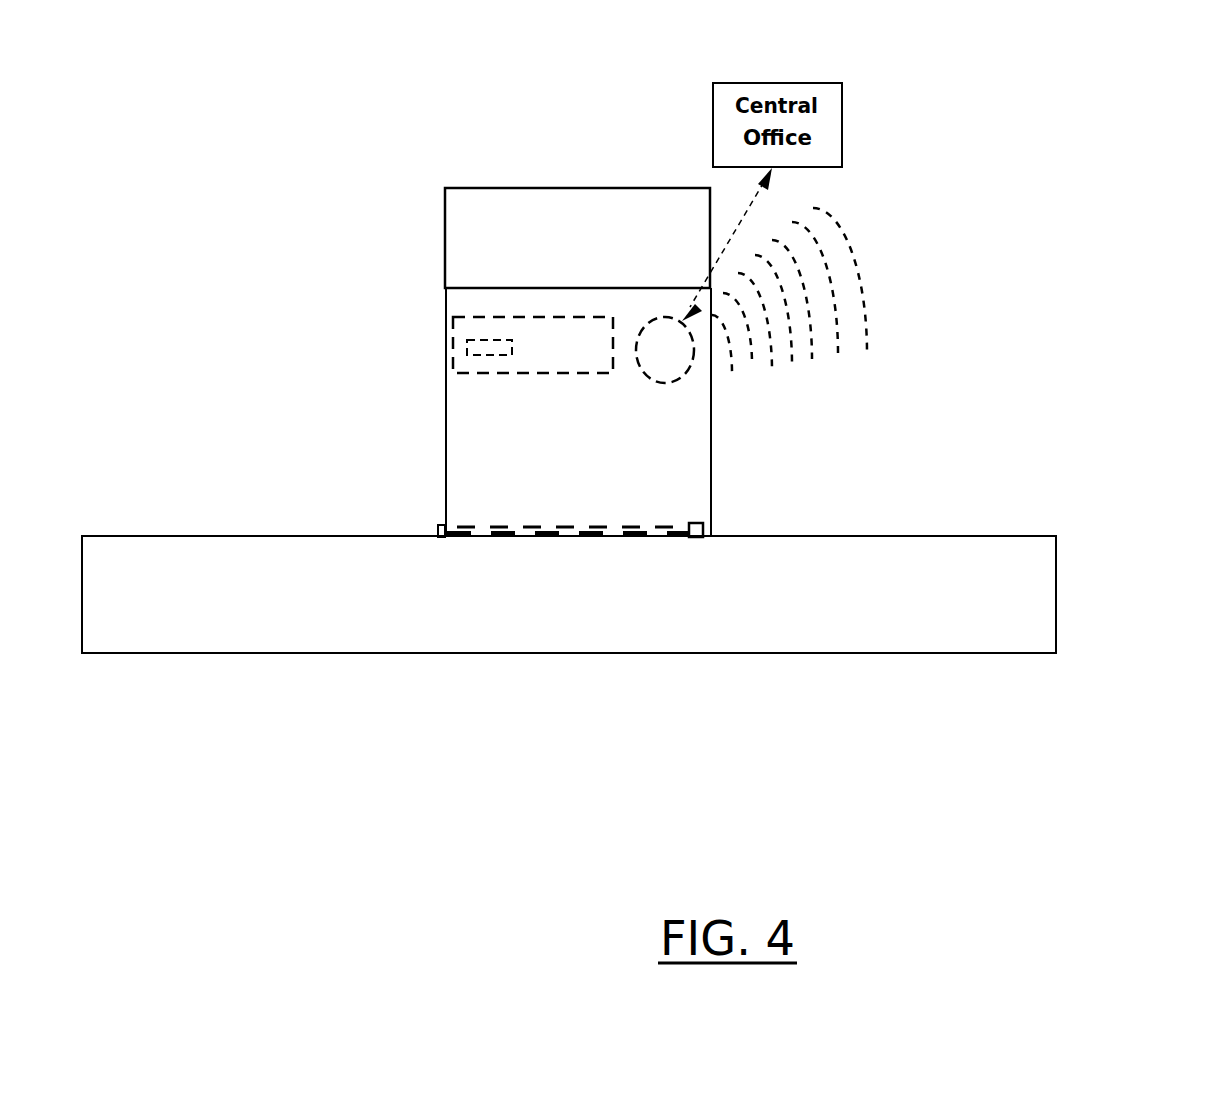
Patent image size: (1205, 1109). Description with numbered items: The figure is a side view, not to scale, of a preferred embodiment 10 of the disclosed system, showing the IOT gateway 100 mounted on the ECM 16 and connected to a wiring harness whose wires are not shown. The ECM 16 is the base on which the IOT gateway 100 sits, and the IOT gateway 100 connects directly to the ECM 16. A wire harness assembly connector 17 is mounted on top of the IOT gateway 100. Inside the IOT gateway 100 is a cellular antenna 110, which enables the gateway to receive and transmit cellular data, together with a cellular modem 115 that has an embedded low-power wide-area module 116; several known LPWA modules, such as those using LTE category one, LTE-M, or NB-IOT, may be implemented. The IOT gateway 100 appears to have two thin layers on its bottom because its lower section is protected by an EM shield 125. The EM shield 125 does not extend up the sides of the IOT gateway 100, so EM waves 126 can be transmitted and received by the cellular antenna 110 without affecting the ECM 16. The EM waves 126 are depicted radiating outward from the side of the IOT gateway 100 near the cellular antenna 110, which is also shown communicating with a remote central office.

The preferred embodiment 10 is at (1045, 719).
The ECM 16 is at (586, 619).
The wire harness assembly connector 17 is at (591, 268).
The IOT gateway 100 is at (603, 449).
The cellular antenna 110 is at (686, 367).
The cellular modem 115 is at (588, 369).
The LPWA module 116 is at (467, 352).
The EM shield 125 is at (437, 530).
The EM waves 126 is at (730, 417).